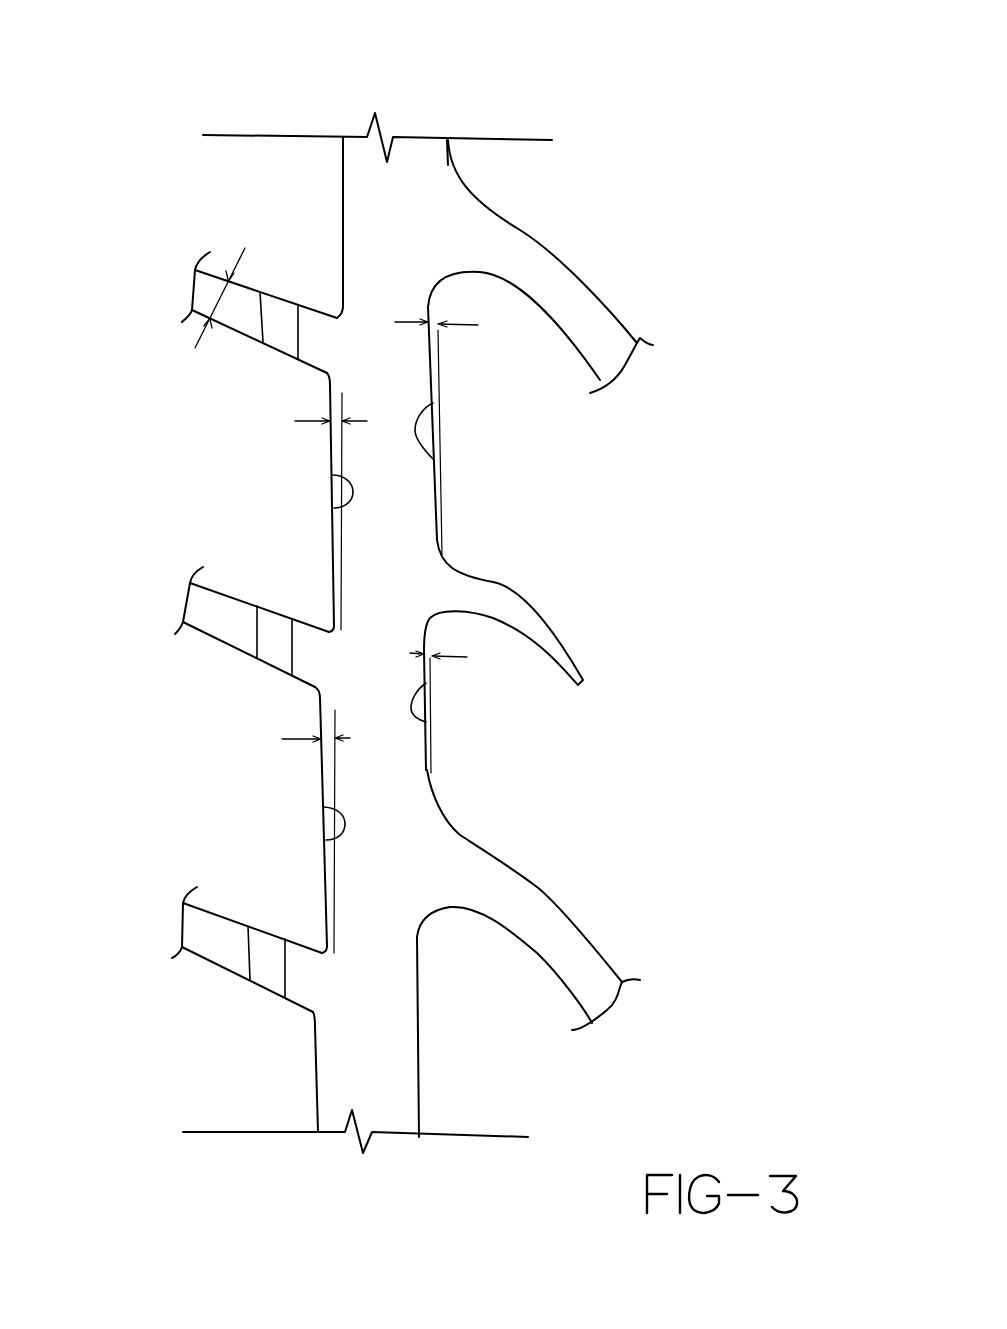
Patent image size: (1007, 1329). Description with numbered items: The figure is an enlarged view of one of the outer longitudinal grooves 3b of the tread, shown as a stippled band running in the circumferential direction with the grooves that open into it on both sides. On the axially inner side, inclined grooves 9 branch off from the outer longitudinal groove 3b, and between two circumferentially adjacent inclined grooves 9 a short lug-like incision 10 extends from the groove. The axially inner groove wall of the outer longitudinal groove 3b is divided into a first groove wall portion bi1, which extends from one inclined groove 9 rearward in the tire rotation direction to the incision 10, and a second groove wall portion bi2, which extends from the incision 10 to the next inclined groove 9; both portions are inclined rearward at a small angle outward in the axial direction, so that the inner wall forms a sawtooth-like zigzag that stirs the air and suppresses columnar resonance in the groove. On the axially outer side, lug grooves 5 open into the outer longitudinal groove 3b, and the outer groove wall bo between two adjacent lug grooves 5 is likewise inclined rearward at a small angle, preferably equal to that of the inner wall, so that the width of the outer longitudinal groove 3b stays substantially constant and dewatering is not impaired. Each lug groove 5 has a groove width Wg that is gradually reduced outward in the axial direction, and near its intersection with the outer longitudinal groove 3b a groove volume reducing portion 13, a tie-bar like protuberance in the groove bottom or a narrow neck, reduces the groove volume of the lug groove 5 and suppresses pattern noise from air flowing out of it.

The outer longitudinal groove 3b is at (417, 160).
The lug groove 5 is at (316, 332).
The groove volume reducing portion 13 is at (267, 650).
The inclined groove 9 is at (573, 287).
The lug-like incision 10 is at (527, 618).
The groove width of the lug grooves Wg is at (197, 290).
The outer groove wall bo is at (337, 510).
The second groove wall portion bi2 is at (438, 468).
The first groove wall portion bi1 is at (431, 720).